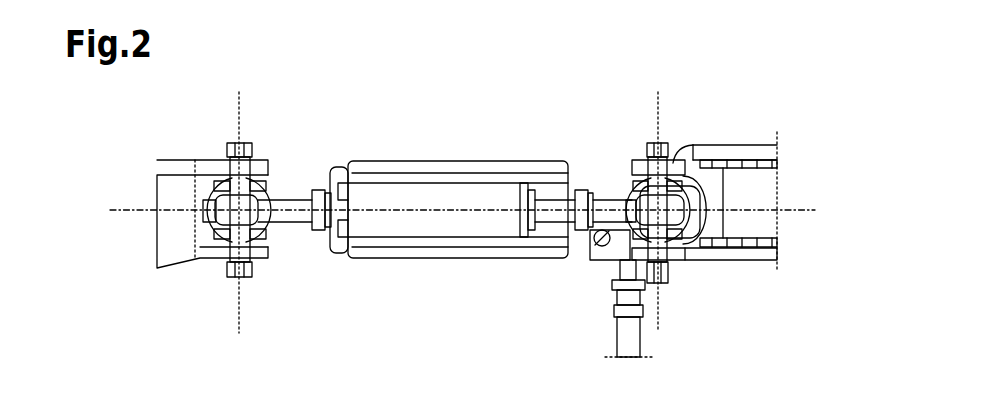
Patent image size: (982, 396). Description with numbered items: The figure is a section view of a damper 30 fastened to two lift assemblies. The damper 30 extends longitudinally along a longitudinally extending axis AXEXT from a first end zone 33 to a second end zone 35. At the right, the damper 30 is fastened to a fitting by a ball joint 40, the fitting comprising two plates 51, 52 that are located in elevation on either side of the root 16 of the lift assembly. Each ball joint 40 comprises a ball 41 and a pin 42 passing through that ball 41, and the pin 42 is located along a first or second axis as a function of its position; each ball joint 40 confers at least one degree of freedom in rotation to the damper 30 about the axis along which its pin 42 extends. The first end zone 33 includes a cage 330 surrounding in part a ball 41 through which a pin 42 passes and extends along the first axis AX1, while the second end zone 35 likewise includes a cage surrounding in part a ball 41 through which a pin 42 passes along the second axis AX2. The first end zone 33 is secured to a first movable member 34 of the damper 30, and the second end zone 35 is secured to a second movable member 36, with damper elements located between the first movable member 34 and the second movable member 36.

The root 16 is at (739, 209).
The damper 30 is at (483, 175).
The first end zone 33 is at (582, 176).
The first movable member 34 is at (472, 183).
The second end zone 35 is at (293, 229).
The second movable member 36 is at (385, 160).
The ball joint 40 is at (267, 194).
The ball 41 is at (278, 240).
The pin 42 is at (200, 250).
The plate 51 is at (757, 145).
The plate 52 is at (748, 262).
The cage 330 is at (215, 180).
The first axis AX1 is at (657, 112).
The second axis AX2 is at (241, 107).
The longitudinally extending axis AXEXT is at (117, 205).